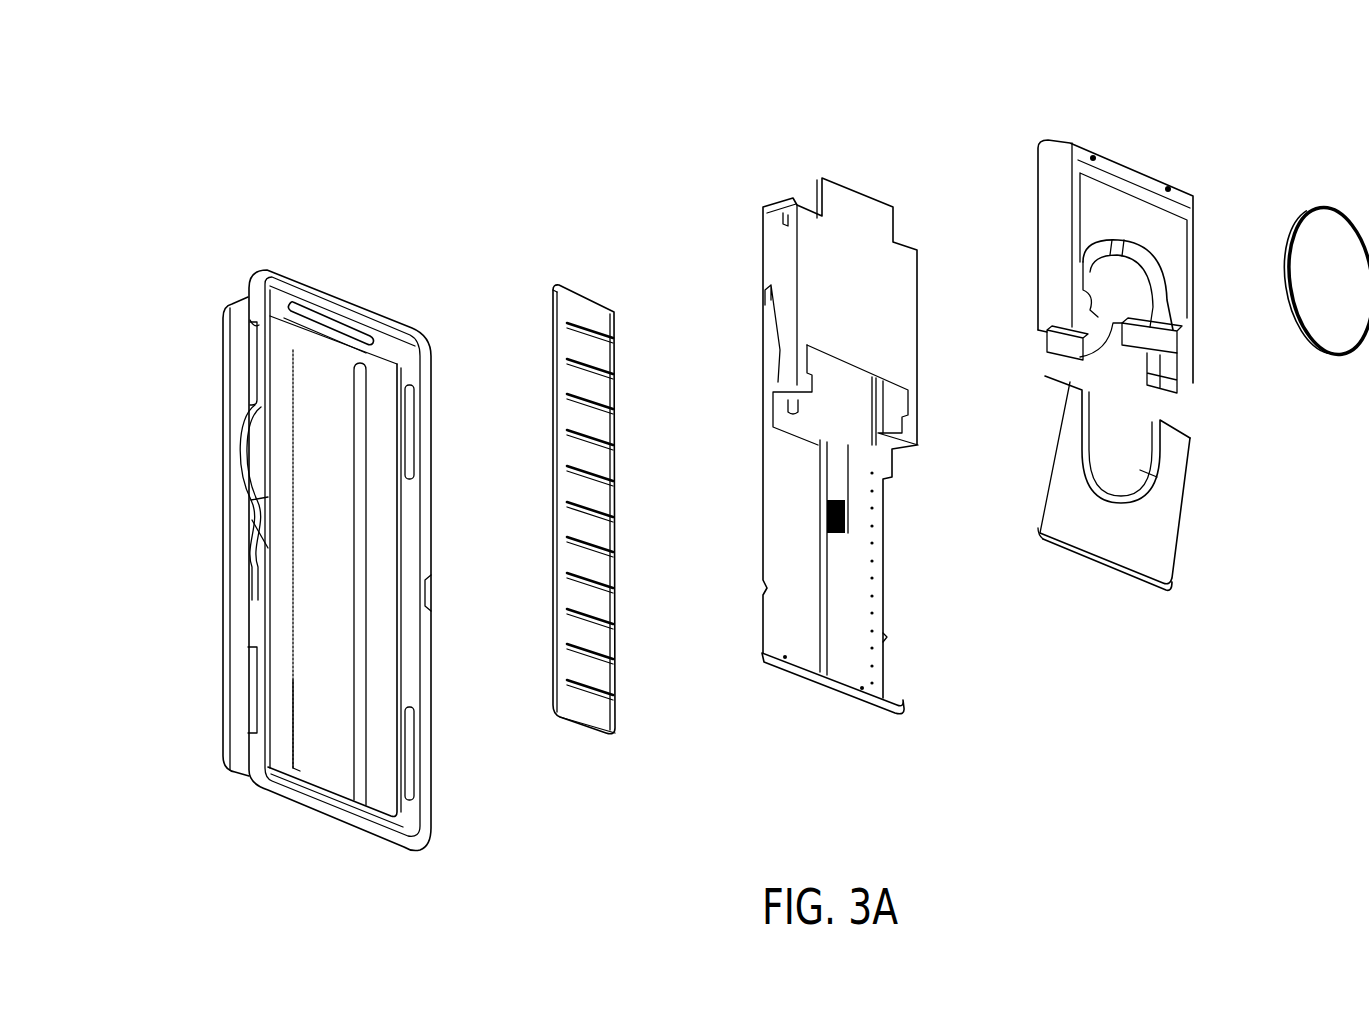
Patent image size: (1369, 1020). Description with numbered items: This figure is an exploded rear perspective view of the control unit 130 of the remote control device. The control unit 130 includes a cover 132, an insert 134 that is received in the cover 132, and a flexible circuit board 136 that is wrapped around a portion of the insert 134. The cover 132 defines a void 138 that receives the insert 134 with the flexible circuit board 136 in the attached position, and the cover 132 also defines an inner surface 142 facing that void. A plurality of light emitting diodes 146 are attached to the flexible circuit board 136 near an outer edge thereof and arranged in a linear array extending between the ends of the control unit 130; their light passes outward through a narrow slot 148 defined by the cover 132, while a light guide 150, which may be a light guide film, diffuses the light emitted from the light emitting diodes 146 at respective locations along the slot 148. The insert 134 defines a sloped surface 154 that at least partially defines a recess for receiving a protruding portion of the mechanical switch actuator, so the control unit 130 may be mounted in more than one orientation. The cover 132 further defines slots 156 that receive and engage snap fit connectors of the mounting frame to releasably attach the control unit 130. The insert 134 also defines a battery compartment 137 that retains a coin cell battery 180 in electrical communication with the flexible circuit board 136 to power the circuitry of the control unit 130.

The control unit 130 is at (229, 93).
The cover 132 is at (313, 272).
The insert 134 is at (1198, 228).
The flexible circuit board 136 is at (918, 292).
The battery compartment 137 is at (1113, 302).
The void 138 is at (375, 513).
The inner surface 142 is at (337, 407).
The light emitting diodes (LEDs) 146 is at (615, 640).
The slot 148 is at (304, 688).
The light guide 150 is at (574, 284).
The sloped surface 154 is at (1145, 538).
The slots 156 is at (253, 365).
The coin cell battery 180 is at (1349, 212).